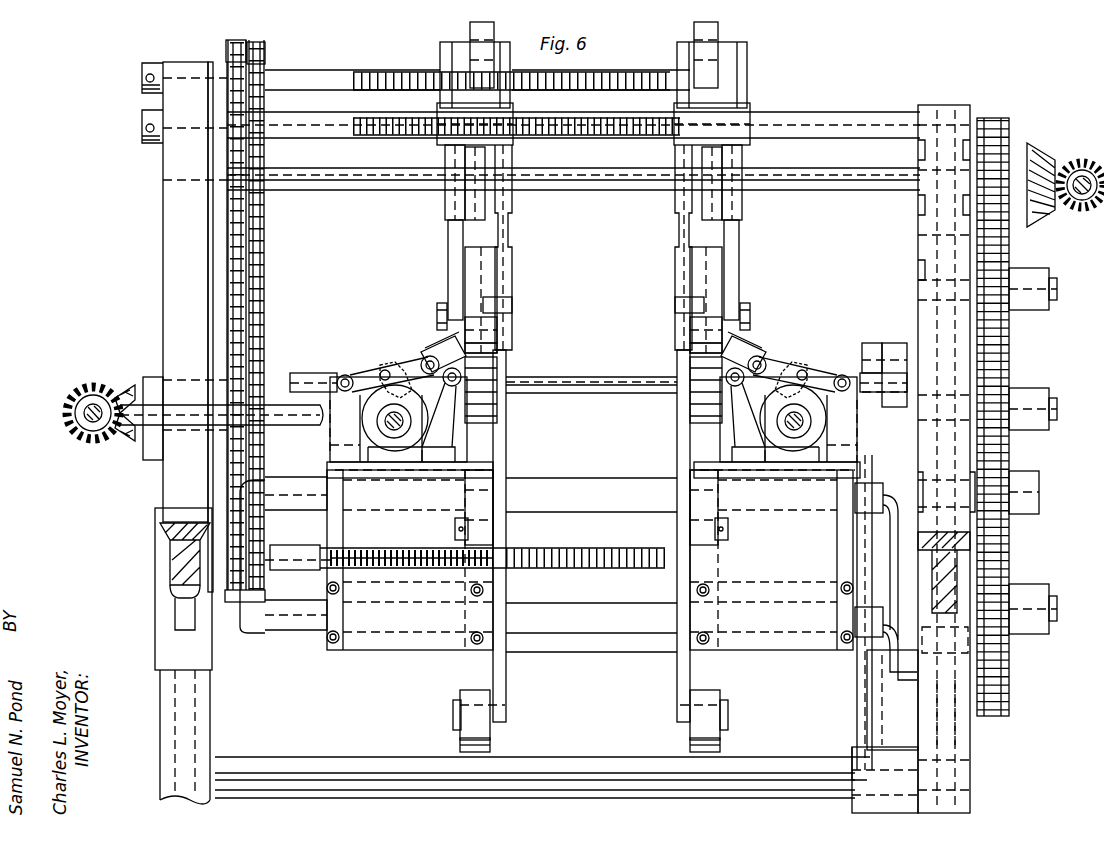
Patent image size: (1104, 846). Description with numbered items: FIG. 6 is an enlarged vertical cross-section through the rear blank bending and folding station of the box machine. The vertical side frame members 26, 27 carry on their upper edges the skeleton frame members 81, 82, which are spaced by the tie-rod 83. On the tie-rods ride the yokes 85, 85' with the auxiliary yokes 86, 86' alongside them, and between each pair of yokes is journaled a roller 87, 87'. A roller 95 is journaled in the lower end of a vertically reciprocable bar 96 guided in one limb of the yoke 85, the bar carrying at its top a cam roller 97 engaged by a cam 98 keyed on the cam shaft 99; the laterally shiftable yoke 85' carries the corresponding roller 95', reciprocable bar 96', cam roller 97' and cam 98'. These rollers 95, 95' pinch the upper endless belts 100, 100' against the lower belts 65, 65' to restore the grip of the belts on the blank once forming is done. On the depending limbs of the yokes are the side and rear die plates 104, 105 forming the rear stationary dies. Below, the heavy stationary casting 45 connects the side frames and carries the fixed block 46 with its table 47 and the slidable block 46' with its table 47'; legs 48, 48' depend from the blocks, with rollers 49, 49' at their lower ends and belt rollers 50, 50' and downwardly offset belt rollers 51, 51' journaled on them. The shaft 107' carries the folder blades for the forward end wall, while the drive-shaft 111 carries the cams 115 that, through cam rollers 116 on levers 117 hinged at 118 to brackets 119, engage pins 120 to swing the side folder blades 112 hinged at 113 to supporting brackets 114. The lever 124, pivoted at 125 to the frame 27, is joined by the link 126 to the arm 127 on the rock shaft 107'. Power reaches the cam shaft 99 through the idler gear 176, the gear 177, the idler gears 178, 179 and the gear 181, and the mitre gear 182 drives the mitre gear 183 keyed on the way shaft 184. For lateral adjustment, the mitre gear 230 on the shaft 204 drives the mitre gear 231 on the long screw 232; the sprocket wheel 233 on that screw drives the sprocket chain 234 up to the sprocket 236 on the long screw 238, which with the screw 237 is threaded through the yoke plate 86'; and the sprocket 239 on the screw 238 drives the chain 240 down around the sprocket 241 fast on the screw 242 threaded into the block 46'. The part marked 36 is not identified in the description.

The side frame member 26 is at (928, 704).
The side frame member 27 is at (205, 725).
The left bearing block 36 is at (158, 540).
The stationary casting 45 is at (578, 480).
The block 46 is at (771, 560).
The block 46' is at (410, 560).
The table or platform 47 is at (733, 507).
The table or platform 47' is at (439, 507).
The leg 48 is at (665, 536).
The leg 48' is at (514, 536).
The roller 49 is at (704, 703).
The roller 49' is at (477, 702).
The belt roller 50 is at (688, 387).
The belt roller 50' is at (499, 385).
The belt roller 51 is at (727, 509).
The belt roller 51' is at (451, 509).
The lower belt 65 is at (720, 746).
The lower belt 65' is at (454, 742).
The skeleton frame member 81 is at (932, 244).
The skeleton frame member 82 is at (163, 242).
The tie-rod 83 is at (810, 122).
The yoke 85 is at (665, 247).
The yoke 85' is at (519, 247).
The auxiliary yoke 86 is at (749, 270).
The auxiliary yoke 86' is at (436, 270).
The roller 87 is at (726, 83).
The roller 87' is at (461, 81).
The roller 95 is at (681, 333).
The roller 95' is at (505, 327).
The vertically reciprocable bar 96 is at (673, 304).
The reciprocable bar 96' is at (514, 297).
The cam roller 97 is at (744, 184).
The cam roller 97' is at (446, 195).
The cam 98 is at (753, 182).
The cam 98' is at (435, 182).
The cam shaft 99 is at (862, 190).
The upper endless belt 100 is at (693, 53).
The upper endless belt 100' is at (502, 54).
The side die plate 104 is at (465, 292).
The rear die plate 105 is at (498, 350).
The shaft 107' is at (591, 372).
The drive-shaft 111 is at (386, 417).
The side folder blade 112 is at (440, 345).
The hinge 113 is at (446, 386).
The supporting bracket 114 is at (593, 447).
The cam 115 is at (365, 432).
The cam roller 116 is at (383, 370).
The lever 117 is at (356, 374).
The hinge 118 is at (340, 374).
The bracket 119 is at (338, 450).
The pin 120 is at (424, 358).
The lever 124 is at (862, 478).
The pivot 125 is at (565, 758).
The link 126 is at (868, 342).
The arm 127 is at (895, 342).
The idler gear 176 is at (1028, 588).
The gear 177 is at (1032, 473).
The idler gear 178 is at (1030, 390).
The idler gear 179 is at (1035, 312).
The gear 181 is at (1000, 120).
The mitre gear 182 is at (1045, 145).
The mitre gear 183 is at (1084, 160).
The way shaft 184 is at (1078, 205).
The shaft 204 is at (96, 403).
The mitre gear 230 is at (78, 392).
The mitre gear 231 is at (132, 384).
The long screw 232 is at (234, 402).
The sprocket wheel 233 is at (238, 455).
The sprocket chain 234 is at (232, 300).
The sprocket 236 is at (236, 50).
The long screw 237 is at (238, 140).
The long screw 238 is at (340, 64).
The sprocket 239 is at (262, 56).
The chain 240 is at (262, 262).
The sprocket 241 is at (262, 583).
The screw 242 is at (298, 532).